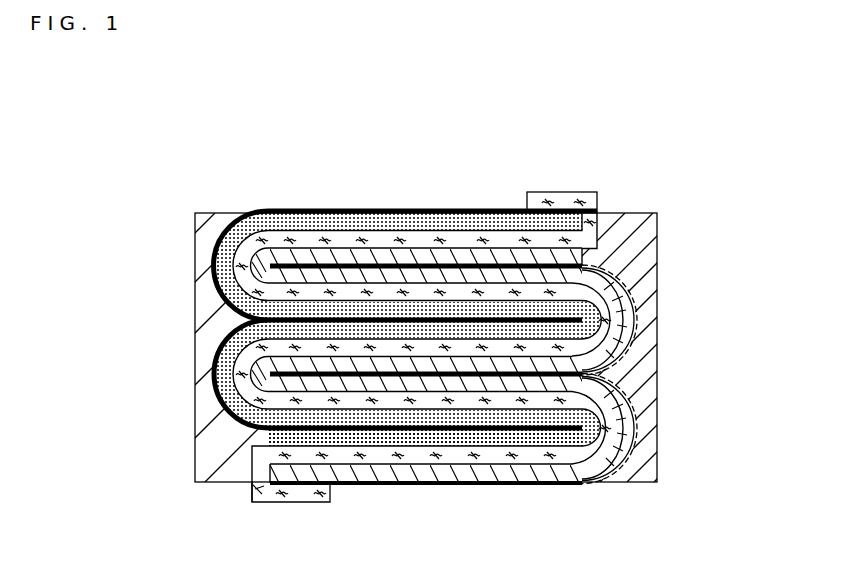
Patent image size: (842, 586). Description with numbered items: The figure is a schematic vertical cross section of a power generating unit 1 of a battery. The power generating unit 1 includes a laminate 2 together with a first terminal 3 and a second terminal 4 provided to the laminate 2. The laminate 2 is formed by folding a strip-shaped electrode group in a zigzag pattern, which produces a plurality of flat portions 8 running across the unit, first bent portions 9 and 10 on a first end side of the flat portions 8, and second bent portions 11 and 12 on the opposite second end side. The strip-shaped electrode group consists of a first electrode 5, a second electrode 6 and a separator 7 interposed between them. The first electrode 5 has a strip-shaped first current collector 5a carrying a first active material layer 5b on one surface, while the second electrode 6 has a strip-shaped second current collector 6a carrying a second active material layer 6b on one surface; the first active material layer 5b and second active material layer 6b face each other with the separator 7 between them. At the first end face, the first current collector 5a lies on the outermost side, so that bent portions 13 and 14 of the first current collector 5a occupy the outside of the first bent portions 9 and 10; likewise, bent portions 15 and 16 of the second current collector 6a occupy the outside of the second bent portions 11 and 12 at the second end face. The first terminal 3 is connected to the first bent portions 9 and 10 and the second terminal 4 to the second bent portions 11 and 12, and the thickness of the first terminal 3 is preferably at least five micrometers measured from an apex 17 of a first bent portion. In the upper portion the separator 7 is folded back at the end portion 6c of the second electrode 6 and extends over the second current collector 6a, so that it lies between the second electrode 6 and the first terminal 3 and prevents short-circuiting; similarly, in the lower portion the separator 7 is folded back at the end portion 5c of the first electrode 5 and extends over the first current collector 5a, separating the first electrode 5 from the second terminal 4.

The power generating unit 1 is at (597, 142).
The laminate 2 is at (440, 494).
The first terminal 3 is at (638, 212).
The second terminal 4 is at (210, 228).
The first electrode 5 is at (522, 546).
The first current collector 5a is at (535, 485).
The first active material layer 5b is at (581, 485).
The end portion of the first electrode 5c is at (255, 486).
The second electrode 6 is at (530, 162).
The second current collector 6a is at (467, 210).
The second active material layer 6b is at (502, 210).
The end portion of the second electrode 6c is at (592, 210).
The separator 7 is at (300, 503).
The flat portions 8 is at (588, 126).
The first bent portion 9 is at (625, 327).
The first bent portion 10 is at (626, 441).
The second bent portion 11 is at (222, 279).
The second bent portion 12 is at (222, 384).
The bent portion of the first current collector 13 is at (631, 284).
The bent portion of the first current collector 14 is at (633, 418).
The bent portion of the second current collector 15 is at (223, 246).
The bent portion of the second current collector 16 is at (223, 357).
The apex of first bent portion 17 is at (628, 317).